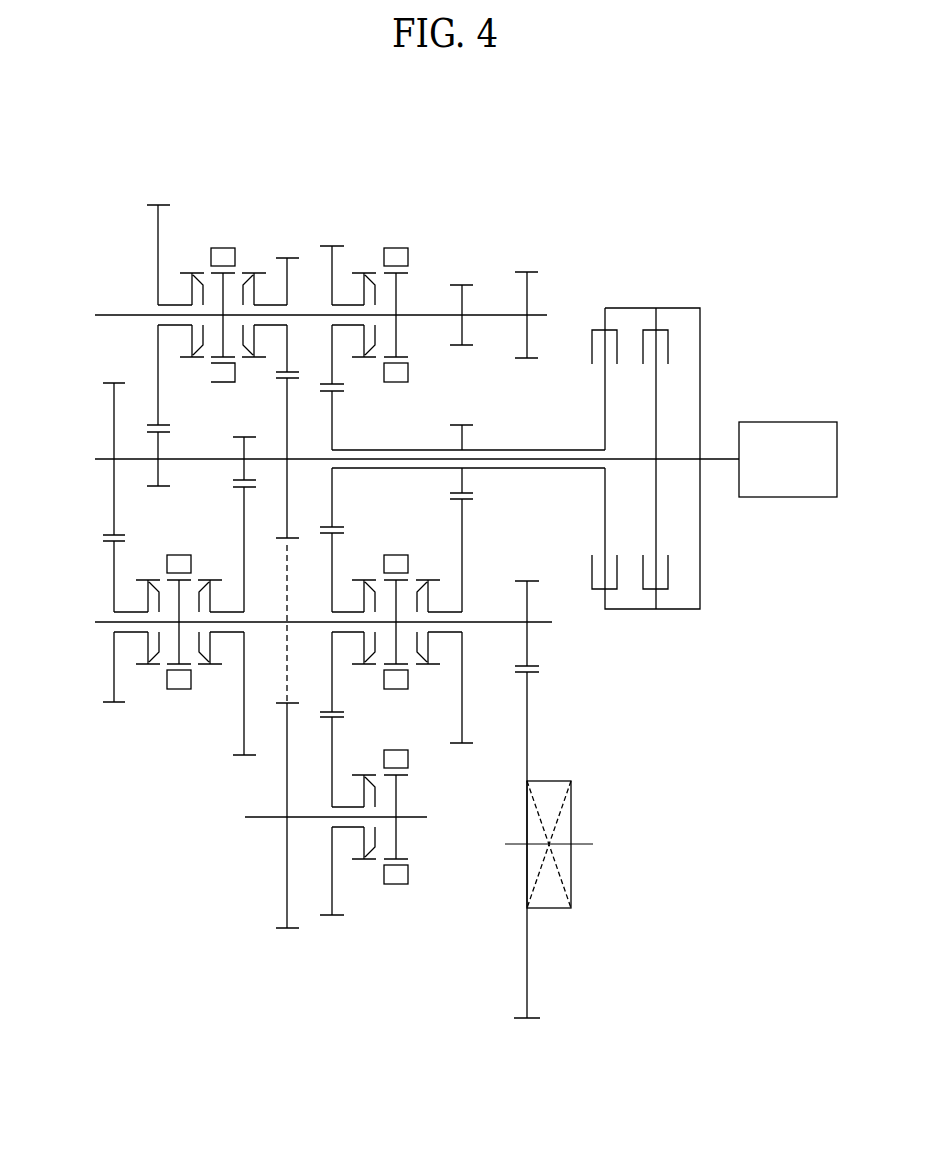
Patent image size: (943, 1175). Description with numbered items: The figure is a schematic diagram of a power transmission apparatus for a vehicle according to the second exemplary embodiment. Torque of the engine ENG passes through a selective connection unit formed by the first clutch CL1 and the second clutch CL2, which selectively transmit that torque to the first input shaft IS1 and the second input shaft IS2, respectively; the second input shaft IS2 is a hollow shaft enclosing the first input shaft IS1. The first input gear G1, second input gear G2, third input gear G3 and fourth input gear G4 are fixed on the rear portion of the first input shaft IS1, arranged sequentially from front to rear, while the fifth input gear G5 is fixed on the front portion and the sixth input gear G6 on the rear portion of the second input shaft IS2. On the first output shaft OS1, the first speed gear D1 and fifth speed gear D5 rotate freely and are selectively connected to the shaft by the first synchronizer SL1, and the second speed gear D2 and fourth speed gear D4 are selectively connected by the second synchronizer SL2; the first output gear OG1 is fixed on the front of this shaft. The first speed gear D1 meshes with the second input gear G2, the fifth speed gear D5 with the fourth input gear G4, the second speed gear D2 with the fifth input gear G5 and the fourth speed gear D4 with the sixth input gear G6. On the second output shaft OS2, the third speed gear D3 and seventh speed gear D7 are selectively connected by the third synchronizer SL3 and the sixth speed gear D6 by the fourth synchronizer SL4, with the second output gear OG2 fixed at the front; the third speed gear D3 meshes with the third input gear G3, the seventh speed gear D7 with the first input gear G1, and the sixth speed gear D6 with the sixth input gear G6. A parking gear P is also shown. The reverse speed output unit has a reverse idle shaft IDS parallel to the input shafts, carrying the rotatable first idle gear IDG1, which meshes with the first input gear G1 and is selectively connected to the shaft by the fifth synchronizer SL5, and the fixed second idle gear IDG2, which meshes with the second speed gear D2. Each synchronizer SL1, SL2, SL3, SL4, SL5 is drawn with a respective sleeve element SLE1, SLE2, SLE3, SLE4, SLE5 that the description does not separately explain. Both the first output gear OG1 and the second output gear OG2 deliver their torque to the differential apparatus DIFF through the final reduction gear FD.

The second output shaft OS2 is at (118, 314).
The first input shaft IS1 is at (575, 460).
The second input shaft IS2 is at (502, 470).
The first output shaft OS1 is at (103, 623).
The reverse idle shaft IDS is at (256, 818).
The third speed gear D3 is at (158, 245).
The third input gear G3 is at (158, 446).
The third synchronizer SL3 is at (199, 228).
The third sleeve SLE3 is at (224, 248).
The seventh speed gear D7 is at (287, 277).
The first input gear G1 is at (287, 452).
The first idle gear IDG1 is at (287, 893).
The sixth speed gear D6 is at (332, 258).
The sixth input gear G6 is at (332, 421).
The fourth synchronizer SL4 is at (364, 236).
The fourth sleeve SLE4 is at (397, 247).
The parking gear P is at (462, 297).
The second output gear OG2 is at (528, 290).
The fourth input gear G4 is at (114, 418).
The second input gear G2 is at (244, 440).
The fifth input gear G5 is at (462, 436).
The fifth speed gear D5 is at (114, 577).
The first speed gear D1 is at (244, 522).
The first synchronizer SL1 is at (139, 701).
The first sleeve SLE1 is at (177, 689).
The fourth speed gear D4 is at (332, 553).
The second speed gear D2 is at (462, 548).
The second synchronizer SL2 is at (373, 693).
The second sleeve SLE2 is at (396, 690).
The first output gear OG1 is at (528, 600).
The second idle gear IDG2 is at (332, 893).
The fifth synchronizer SL5 is at (426, 880).
The fifth sleeve SLE5 is at (396, 885).
The final reduction gear FD is at (528, 727).
The differential apparatus DIFF is at (571, 808).
The first clutch CL1 is at (677, 341).
The second clutch CL2 is at (619, 318).
The engine ENG is at (788, 459).